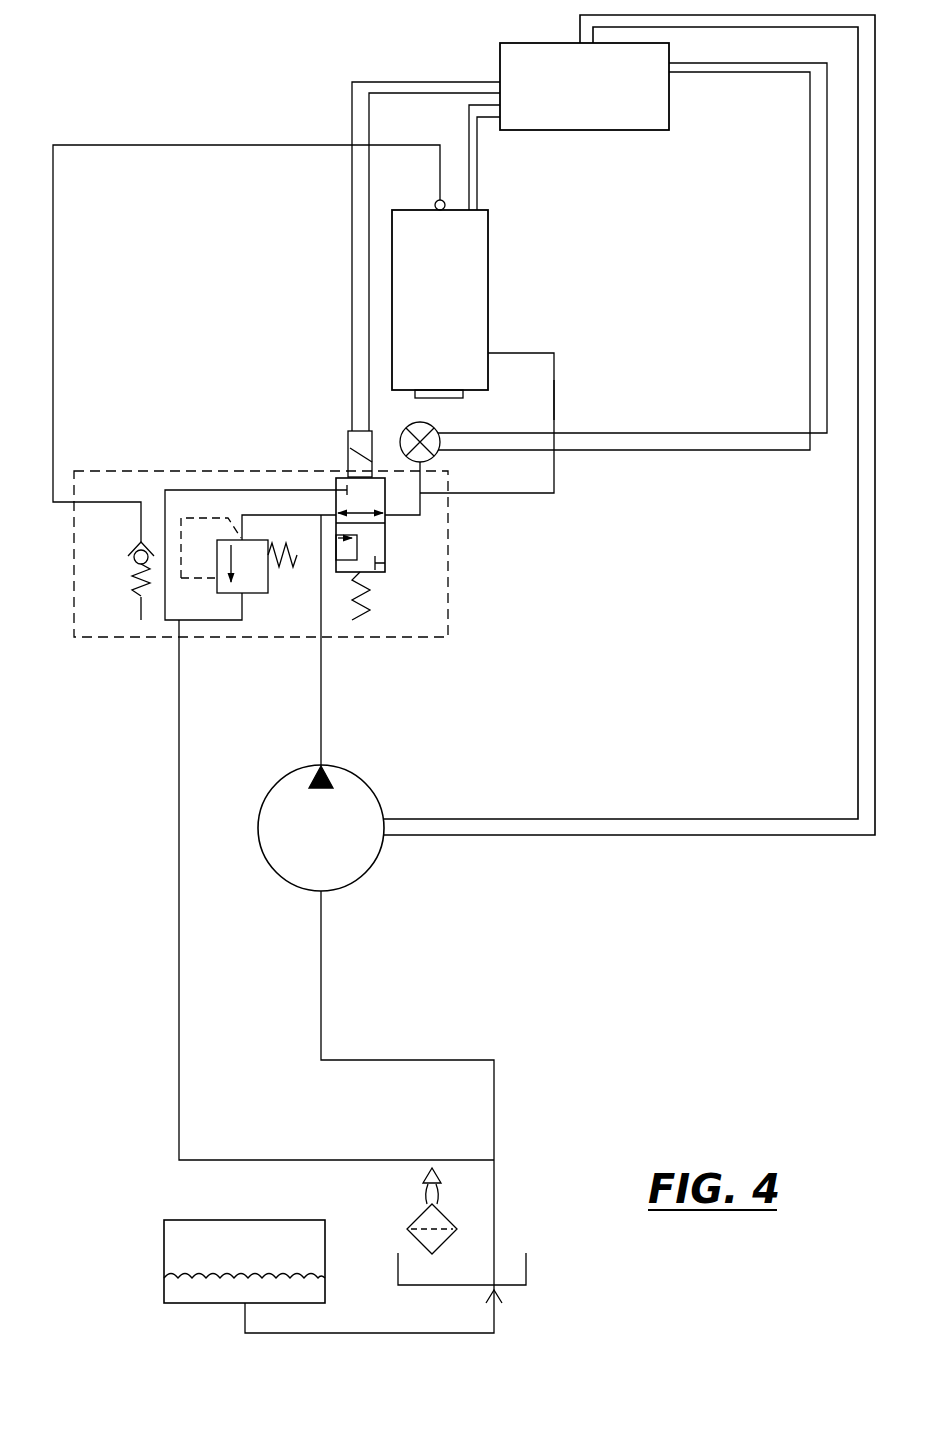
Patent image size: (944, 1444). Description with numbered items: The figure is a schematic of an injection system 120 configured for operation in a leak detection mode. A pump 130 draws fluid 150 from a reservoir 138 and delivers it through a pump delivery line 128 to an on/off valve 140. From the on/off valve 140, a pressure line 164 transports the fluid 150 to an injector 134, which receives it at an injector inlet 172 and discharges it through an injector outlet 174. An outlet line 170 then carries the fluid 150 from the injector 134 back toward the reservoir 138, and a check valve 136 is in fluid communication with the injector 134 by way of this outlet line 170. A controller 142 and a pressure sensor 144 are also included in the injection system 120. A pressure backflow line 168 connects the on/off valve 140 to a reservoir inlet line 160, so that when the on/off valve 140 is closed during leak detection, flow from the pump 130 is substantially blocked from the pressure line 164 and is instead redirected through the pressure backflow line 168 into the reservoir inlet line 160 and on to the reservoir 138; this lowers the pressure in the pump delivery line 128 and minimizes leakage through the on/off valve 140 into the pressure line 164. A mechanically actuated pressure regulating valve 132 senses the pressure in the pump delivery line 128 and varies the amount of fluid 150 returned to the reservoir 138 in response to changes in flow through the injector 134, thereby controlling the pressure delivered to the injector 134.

The injection system 120 is at (682, 913).
The pump delivery line 128 is at (326, 668).
The pump 130 is at (372, 873).
The mechanically actuated pressure regulating valve 132 is at (216, 581).
The injector 134 is at (491, 256).
The check valve 136 is at (125, 574).
The reservoir 138 is at (270, 1230).
The on/off valve 140 is at (336, 563).
The controller 142 is at (672, 100).
The pressure sensor 144 is at (441, 457).
The fluid 150 is at (305, 1290).
The reservoir inlet line 160 is at (182, 1062).
The pressure line 164 is at (557, 388).
The pressure backflow line 168 is at (207, 490).
The outlet line 170 is at (56, 281).
The injector inlet 172 is at (490, 352).
The injector outlet 174 is at (435, 207).